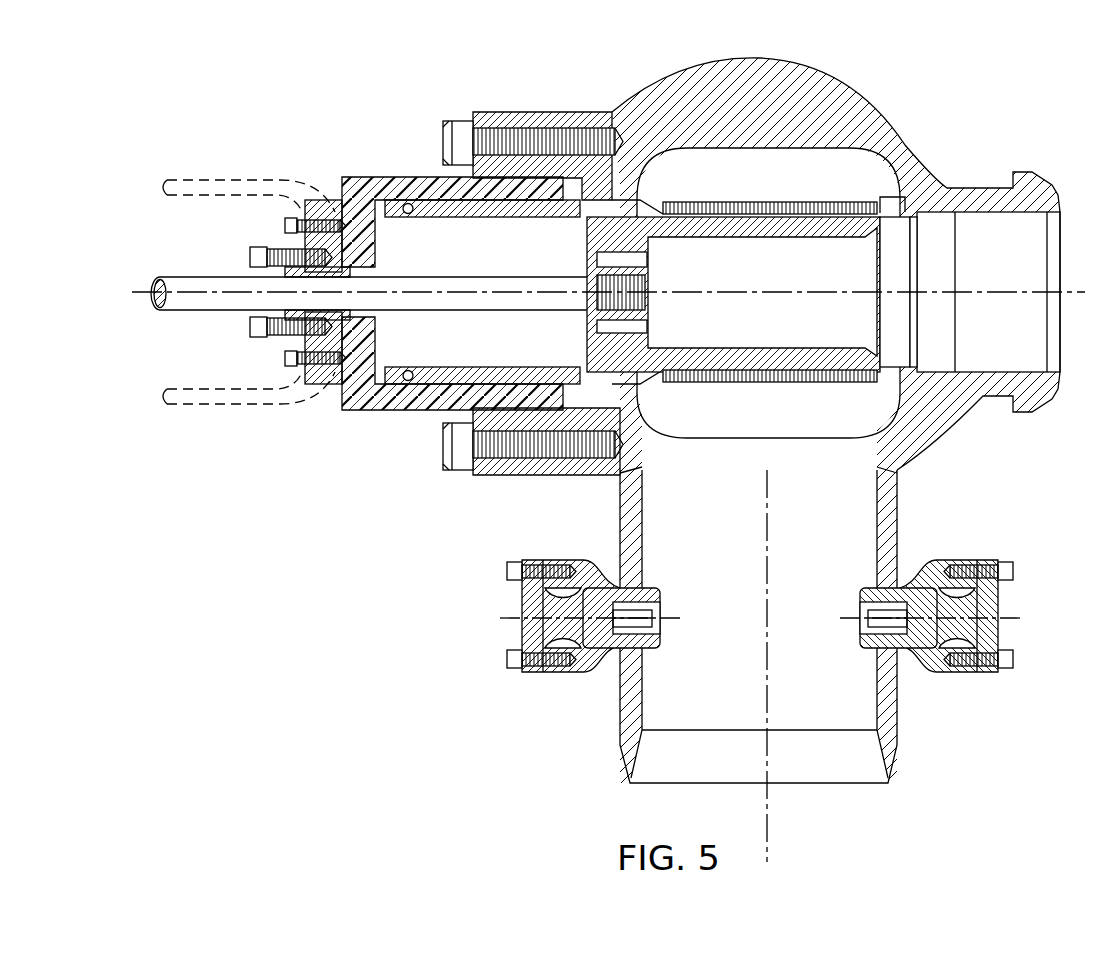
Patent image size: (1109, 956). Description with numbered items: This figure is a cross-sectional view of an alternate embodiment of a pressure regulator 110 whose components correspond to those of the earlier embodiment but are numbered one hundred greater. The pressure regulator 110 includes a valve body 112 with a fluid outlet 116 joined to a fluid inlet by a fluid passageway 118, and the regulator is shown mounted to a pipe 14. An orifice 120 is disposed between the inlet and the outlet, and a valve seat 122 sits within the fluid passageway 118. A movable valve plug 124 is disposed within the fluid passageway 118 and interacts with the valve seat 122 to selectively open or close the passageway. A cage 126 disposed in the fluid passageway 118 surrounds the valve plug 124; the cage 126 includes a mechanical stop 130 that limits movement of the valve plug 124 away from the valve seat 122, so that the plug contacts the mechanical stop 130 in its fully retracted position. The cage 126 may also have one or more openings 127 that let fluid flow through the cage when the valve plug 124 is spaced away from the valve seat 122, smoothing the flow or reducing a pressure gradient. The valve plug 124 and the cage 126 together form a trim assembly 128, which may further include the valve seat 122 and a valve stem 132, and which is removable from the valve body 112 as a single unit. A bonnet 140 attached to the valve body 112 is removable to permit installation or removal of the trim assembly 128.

The pipe conduit 14 is at (839, 770).
The pressure regulator 110 is at (608, 442).
The valve body 112 is at (905, 447).
The fluid outlet 116 is at (977, 237).
The fluid passageway 118 is at (816, 570).
The orifice 120 is at (916, 222).
The valve seat 122 is at (893, 277).
The valve plug 124 is at (743, 225).
The cage 126 is at (833, 198).
The openings 127 is at (793, 200).
The trim assembly 128 is at (771, 155).
The mechanical stop 130 is at (660, 208).
The valve stem 132 is at (199, 308).
The bonnet 140 is at (396, 410).